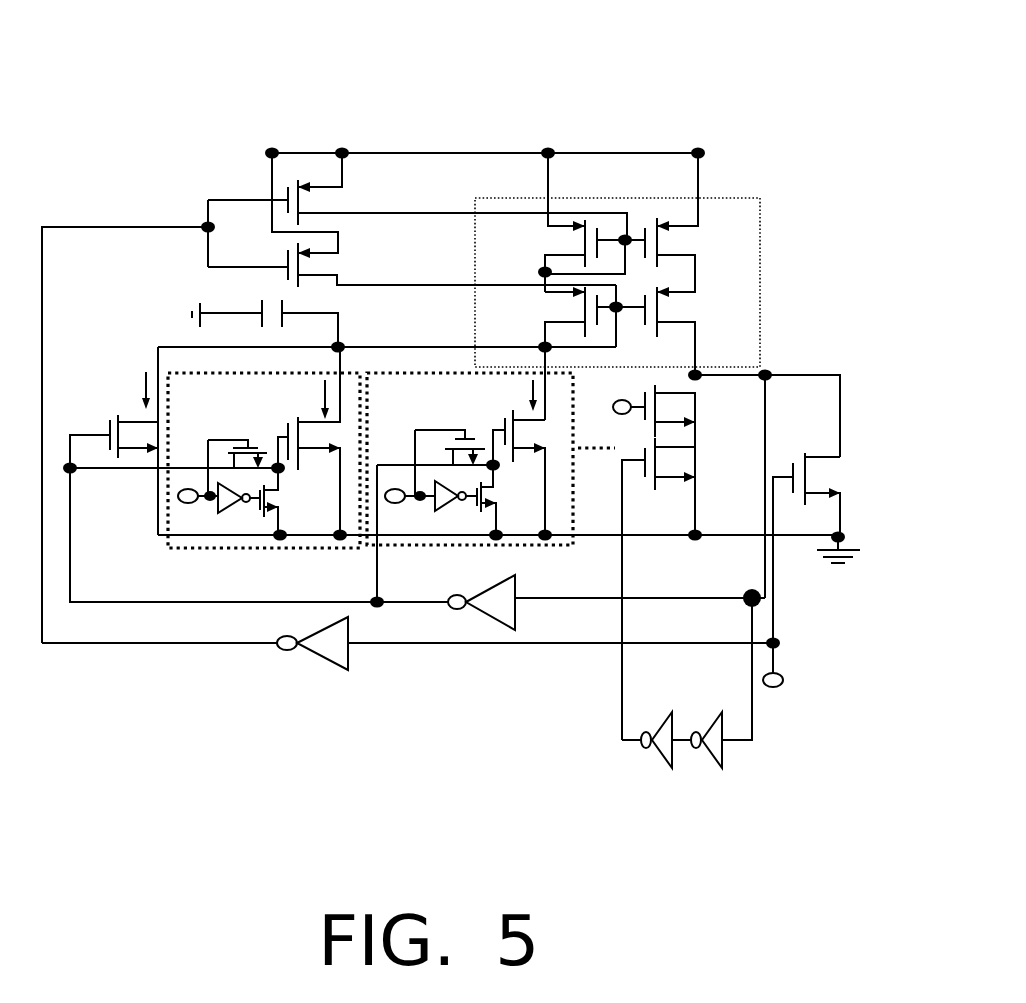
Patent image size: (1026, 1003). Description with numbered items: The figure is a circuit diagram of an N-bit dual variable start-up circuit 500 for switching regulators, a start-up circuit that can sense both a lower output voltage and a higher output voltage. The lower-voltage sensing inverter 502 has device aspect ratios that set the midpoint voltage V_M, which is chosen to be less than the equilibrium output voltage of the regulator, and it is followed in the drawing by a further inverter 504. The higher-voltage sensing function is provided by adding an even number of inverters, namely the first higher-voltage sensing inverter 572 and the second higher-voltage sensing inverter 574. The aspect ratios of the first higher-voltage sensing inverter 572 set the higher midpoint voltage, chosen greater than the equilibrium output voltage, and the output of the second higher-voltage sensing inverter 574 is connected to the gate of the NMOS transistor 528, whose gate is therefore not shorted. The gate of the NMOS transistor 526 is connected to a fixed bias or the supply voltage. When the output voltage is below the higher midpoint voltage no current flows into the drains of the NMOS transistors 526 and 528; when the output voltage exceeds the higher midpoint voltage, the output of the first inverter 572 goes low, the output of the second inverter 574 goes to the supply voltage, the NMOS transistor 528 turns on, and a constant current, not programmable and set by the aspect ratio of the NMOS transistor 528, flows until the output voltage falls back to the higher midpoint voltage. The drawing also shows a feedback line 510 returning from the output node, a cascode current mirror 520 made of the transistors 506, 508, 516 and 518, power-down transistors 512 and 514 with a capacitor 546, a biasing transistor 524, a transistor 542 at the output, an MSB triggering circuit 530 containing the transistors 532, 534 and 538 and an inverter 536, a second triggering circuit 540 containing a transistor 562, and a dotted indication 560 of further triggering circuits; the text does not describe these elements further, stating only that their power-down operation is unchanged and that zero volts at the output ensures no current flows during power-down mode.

The N-bit dual variable start-up circuit 500 is at (470, 52).
The lower-voltage sensing inverter 502 is at (475, 613).
The inverter 504 is at (308, 630).
The PMOS transistor MP1 506 is at (703, 227).
The PMOS transistor MP2 508 is at (703, 297).
The feedback line 510 is at (718, 594).
The PMOS transistor MPPD1 512 is at (347, 188).
The PMOS transistor MPPD2 514 is at (348, 247).
The PMOS transistor MP3 516 is at (545, 233).
The PMOS transistor MP4 518 is at (545, 300).
The cascode current mirror 520 is at (668, 286).
The NMOS transistor MNTB 524 is at (137, 420).
The NMOS transistor 526 is at (698, 421).
The NMOS transistor 528 is at (683, 473).
The MSB triggering circuit 530 is at (235, 446).
The NMOS transistor MNT1 532 is at (280, 428).
The PMOS transistor 534 is at (248, 442).
The inverter 536 is at (218, 503).
The NMOS transistor 538 is at (276, 503).
The (MSB-1) triggering circuit 540 is at (470, 460).
The NMOS transistor MNPD1 542 is at (828, 456).
The capacitor C1 546 is at (268, 307).
The additional triggering circuits (dotted) 560 is at (588, 448).
The PMOS transistor 562 is at (493, 420).
The first higher-voltage sensing inverter 572 is at (722, 777).
The second higher-voltage sensing inverter 574 is at (660, 768).